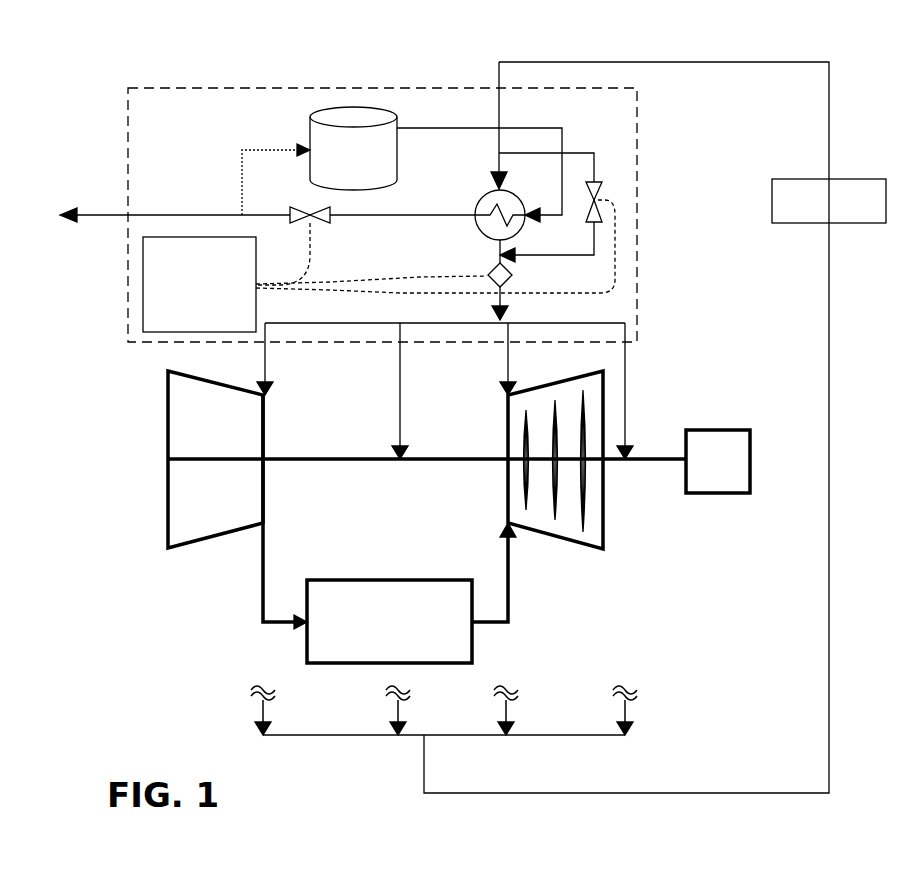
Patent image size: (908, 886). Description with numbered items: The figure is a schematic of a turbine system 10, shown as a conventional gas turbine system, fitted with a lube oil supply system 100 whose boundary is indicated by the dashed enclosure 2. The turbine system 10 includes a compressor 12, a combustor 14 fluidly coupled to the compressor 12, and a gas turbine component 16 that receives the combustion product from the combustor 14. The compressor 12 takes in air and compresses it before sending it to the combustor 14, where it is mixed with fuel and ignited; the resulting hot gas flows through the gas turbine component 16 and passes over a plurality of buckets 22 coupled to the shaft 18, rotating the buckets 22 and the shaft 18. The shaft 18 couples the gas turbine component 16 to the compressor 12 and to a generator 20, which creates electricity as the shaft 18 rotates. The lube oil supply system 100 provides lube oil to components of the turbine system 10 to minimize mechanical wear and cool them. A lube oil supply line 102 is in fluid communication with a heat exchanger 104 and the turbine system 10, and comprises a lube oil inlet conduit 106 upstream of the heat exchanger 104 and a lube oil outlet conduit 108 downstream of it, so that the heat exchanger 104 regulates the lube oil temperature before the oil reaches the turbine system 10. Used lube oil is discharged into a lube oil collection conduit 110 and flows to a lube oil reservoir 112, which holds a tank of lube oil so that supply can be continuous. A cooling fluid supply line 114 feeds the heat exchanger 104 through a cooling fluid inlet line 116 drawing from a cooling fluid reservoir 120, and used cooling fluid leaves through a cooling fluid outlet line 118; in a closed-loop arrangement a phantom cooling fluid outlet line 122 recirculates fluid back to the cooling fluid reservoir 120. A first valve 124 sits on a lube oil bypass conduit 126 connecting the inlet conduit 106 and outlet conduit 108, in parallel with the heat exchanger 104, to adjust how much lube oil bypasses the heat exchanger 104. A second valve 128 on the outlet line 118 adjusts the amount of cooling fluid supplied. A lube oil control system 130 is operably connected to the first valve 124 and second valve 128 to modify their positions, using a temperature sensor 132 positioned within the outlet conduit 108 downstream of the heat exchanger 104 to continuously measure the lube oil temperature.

The lube oil system boundary 2 is at (637, 115).
The turbine system 10 is at (160, 645).
The compressor 12 is at (195, 522).
The combustor 14 is at (384, 592).
The gas turbine component 16 is at (524, 489).
The shaft 18 is at (372, 463).
The generator 20 is at (722, 478).
The buckets 22 is at (523, 465).
The lube oil supply system 100 is at (114, 142).
The lube oil supply line 102 is at (470, 112).
The heat exchanger 104 is at (490, 200).
The lube oil inlet conduit 106 is at (499, 100).
The lube oil outlet conduit 108 is at (492, 251).
The lube oil collection conduit 110 is at (828, 695).
The lube oil reservoir 112 is at (850, 223).
The cooling fluid supply line 114 is at (178, 180).
The cooling fluid inlet line 116 is at (423, 128).
The cooling fluid outlet line 118 is at (364, 216).
The cooling fluid reservoir 120 is at (355, 118).
The cooling fluid outlet line 122 is at (242, 192).
The first valve 124 is at (600, 213).
The lube oil bypass conduit 126 is at (594, 166).
The second valve 128 is at (300, 208).
The lube oil control system 130 is at (379, 266).
The temperature sensor 132 is at (512, 275).